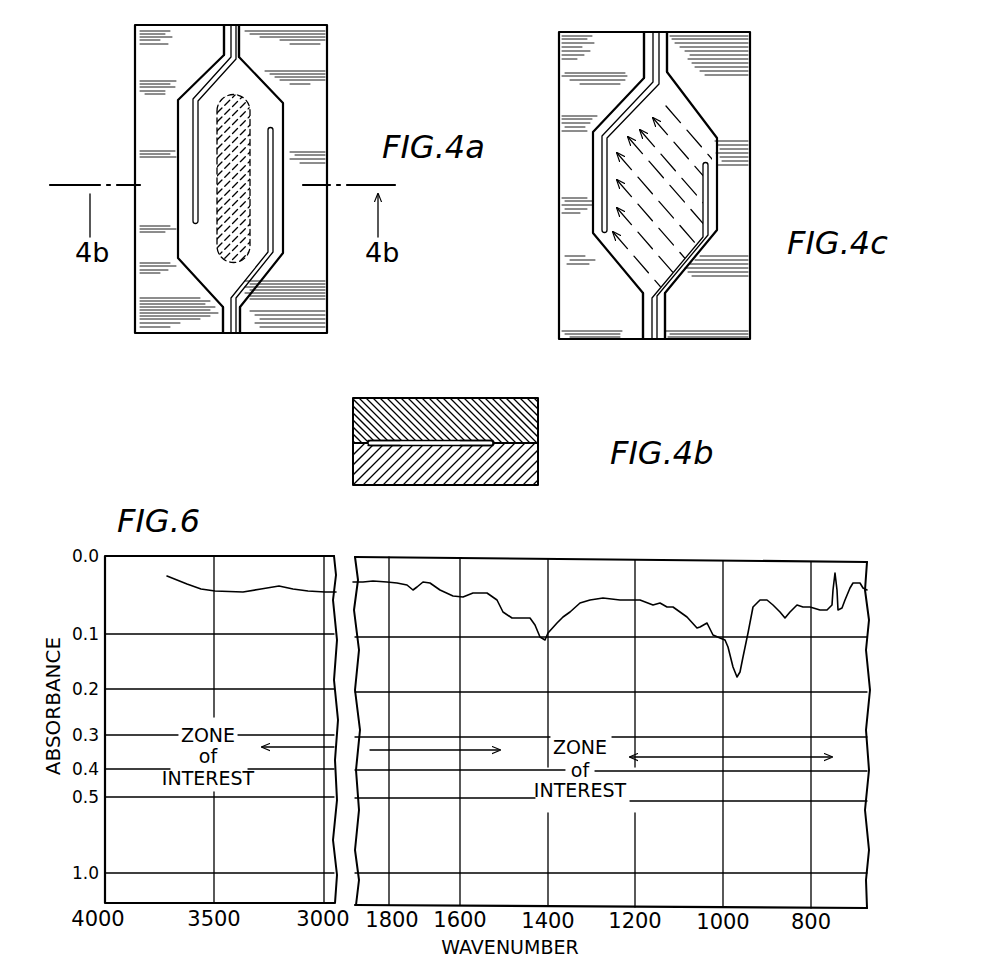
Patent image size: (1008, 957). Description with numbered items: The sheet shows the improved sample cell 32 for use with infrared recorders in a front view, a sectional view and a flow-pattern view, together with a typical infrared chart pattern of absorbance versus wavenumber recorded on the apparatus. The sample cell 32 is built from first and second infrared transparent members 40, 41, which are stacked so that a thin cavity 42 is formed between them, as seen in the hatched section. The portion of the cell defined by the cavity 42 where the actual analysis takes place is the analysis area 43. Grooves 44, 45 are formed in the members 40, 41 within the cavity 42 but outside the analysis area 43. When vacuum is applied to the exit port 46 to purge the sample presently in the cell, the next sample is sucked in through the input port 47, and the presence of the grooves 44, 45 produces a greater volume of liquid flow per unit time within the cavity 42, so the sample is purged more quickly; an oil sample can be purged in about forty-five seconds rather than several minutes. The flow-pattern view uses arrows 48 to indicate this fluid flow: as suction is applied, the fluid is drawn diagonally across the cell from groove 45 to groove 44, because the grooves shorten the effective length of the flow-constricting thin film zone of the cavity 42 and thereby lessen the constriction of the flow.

In FIG. 4A, the sample cell 32 is at (146, 24).
In FIG. 4C, the sample cell 32 is at (551, 39).
In FIG. 4B, the first infrared transparent member 40 is at (376, 405).
In FIG. 4B, the second infrared transparent member 41 is at (362, 462).
In FIG. 4A, the thin cavity 42 is at (205, 268).
In FIG. 4B, the thin cavity 42 is at (425, 441).
In FIG. 4A, the analysis area 43 is at (255, 108).
In FIG. 4A, the groove 44 is at (238, 24).
In FIG. 4C, the groove 44 is at (627, 113).
In FIG. 4B, the groove 44 is at (396, 441).
In FIG. 4A, the groove 45 is at (233, 335).
In FIG. 4C, the groove 45 is at (734, 248).
In FIG. 4B, the groove 45 is at (493, 443).
In FIG. 4A, the exit port 46 is at (226, 28).
In FIG. 4C, the exit port 46 is at (645, 31).
In FIG. 4A, the input port 47 is at (227, 335).
In FIG. 4C, the input port 47 is at (647, 342).
In FIG. 4C, the arrows 48 is at (680, 148).